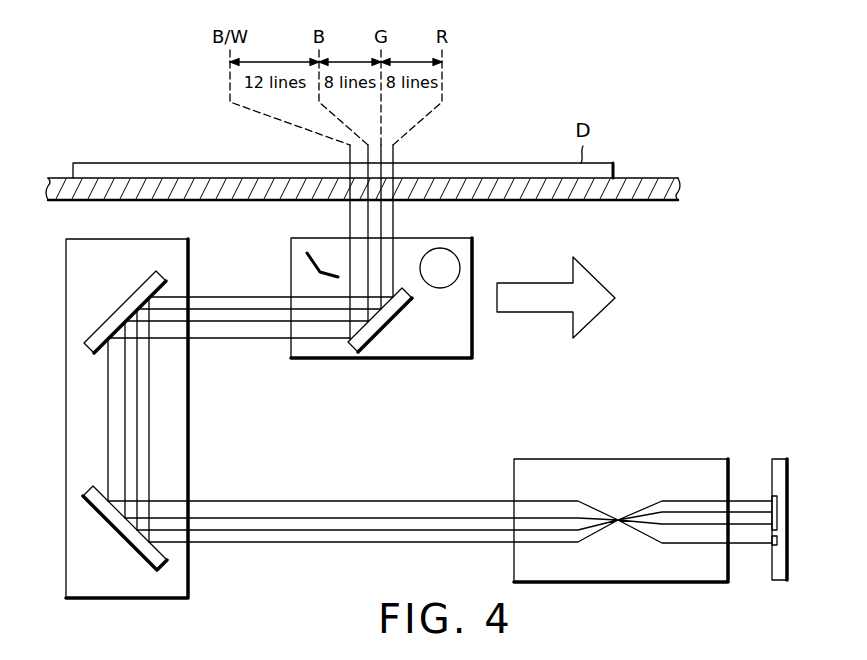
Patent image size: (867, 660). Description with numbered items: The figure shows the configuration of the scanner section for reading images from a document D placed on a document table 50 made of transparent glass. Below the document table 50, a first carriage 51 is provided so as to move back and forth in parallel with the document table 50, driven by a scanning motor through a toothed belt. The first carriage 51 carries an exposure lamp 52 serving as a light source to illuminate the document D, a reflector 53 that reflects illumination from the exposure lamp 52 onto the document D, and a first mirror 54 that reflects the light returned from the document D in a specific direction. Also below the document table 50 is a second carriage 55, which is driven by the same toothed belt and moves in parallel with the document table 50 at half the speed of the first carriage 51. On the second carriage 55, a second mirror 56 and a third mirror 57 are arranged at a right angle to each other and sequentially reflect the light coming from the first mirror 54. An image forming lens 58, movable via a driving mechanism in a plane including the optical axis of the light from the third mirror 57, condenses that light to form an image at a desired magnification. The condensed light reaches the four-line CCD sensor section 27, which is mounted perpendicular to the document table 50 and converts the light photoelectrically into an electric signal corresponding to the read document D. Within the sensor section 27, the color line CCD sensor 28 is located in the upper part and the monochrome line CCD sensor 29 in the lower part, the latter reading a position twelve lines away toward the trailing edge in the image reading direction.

The 4-line CCD sensor section 27 is at (776, 459).
The color line CCD sensor 28 is at (777, 504).
The monochrome line CCD sensor 29 is at (777, 540).
The document table 50 is at (620, 201).
The first carriage 51 is at (473, 340).
The exposure lamp 52 is at (460, 264).
The reflector 53 is at (305, 262).
The first mirror 54 is at (377, 339).
The second carriage 55 is at (66, 253).
The second mirror 56 is at (92, 335).
The third mirror 57 is at (95, 508).
The image forming lens 58 is at (642, 459).